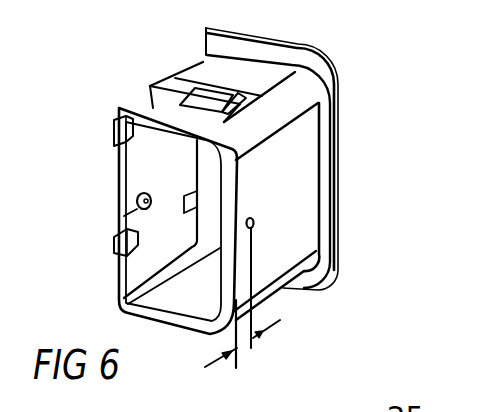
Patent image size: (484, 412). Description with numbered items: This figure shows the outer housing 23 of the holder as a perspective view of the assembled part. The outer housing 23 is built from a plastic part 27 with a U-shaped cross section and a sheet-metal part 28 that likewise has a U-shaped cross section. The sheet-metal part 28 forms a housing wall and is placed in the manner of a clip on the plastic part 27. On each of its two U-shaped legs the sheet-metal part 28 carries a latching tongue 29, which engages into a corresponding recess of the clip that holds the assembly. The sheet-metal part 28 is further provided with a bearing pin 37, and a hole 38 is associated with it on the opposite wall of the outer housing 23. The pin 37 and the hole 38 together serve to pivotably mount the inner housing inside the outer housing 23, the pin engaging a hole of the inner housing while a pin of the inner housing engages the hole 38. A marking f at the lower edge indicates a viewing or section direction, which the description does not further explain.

The outer housing 23 is at (341, 114).
The plastic part 27 is at (292, 166).
The sheet-metal part 28 is at (143, 172).
The latching tongue 29 is at (155, 88).
The bearing pin 37 is at (135, 213).
The hole 38 is at (254, 229).
The direction arrow f is at (243, 343).